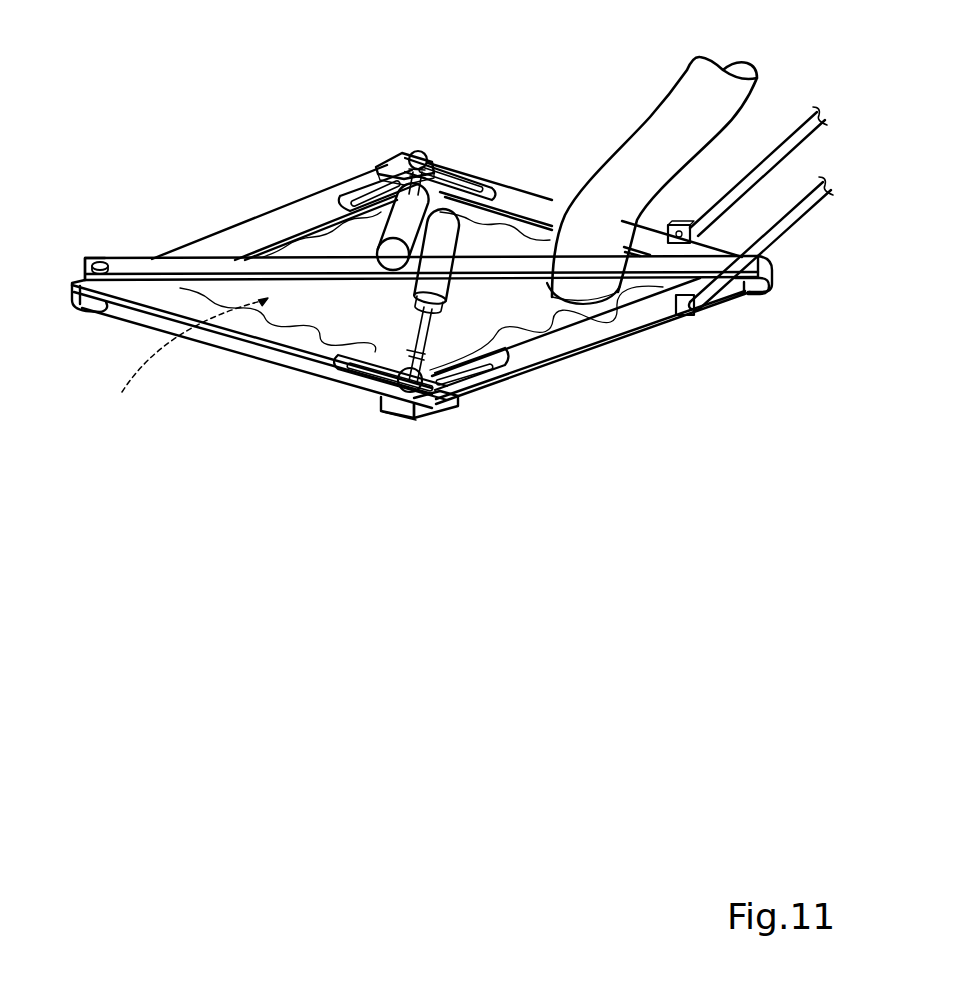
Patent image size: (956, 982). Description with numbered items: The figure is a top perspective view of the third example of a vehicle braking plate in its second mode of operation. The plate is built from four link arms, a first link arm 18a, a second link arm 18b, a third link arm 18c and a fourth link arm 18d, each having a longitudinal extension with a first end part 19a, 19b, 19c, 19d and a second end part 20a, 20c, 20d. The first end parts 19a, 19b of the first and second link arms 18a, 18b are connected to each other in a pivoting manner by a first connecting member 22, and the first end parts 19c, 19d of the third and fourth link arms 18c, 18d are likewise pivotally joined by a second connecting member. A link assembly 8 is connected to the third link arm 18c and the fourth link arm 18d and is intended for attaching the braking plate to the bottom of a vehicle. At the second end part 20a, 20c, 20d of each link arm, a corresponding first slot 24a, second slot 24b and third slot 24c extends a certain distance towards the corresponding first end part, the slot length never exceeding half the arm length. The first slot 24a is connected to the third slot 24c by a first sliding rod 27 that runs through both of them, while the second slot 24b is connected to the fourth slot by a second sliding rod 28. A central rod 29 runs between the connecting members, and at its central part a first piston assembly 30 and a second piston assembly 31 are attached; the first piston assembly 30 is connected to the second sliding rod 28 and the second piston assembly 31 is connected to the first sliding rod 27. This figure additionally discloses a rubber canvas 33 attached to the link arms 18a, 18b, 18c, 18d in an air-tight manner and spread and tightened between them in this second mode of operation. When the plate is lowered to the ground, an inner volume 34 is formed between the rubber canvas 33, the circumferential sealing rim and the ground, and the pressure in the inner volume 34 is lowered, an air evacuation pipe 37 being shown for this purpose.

The link assembly 8 is at (787, 212).
The first link arm 18a is at (278, 340).
The second link arm 18b is at (243, 237).
The third link arm 18c is at (643, 322).
The fourth link arm 18d is at (540, 205).
The first end part 19a is at (76, 270).
The first end part 19b is at (78, 306).
The first end part 19c is at (772, 283).
The first end part 19d is at (747, 294).
The second end part 20a is at (447, 405).
The second end part 20c is at (396, 420).
The second end part 20d is at (385, 162).
The first connecting member 22 is at (102, 261).
The first slot 24a is at (365, 380).
The second slot 24b is at (365, 197).
The third slot 24c is at (455, 182).
The first sliding rod 27 is at (417, 390).
The second sliding rod 28 is at (419, 150).
The central rod 29 is at (649, 262).
The first piston assembly 30 is at (412, 222).
The second piston assembly 31 is at (443, 275).
The rubber canvas 33 is at (345, 325).
The inner volume 34 is at (190, 356).
The air evacuation pipe 37 is at (690, 88).